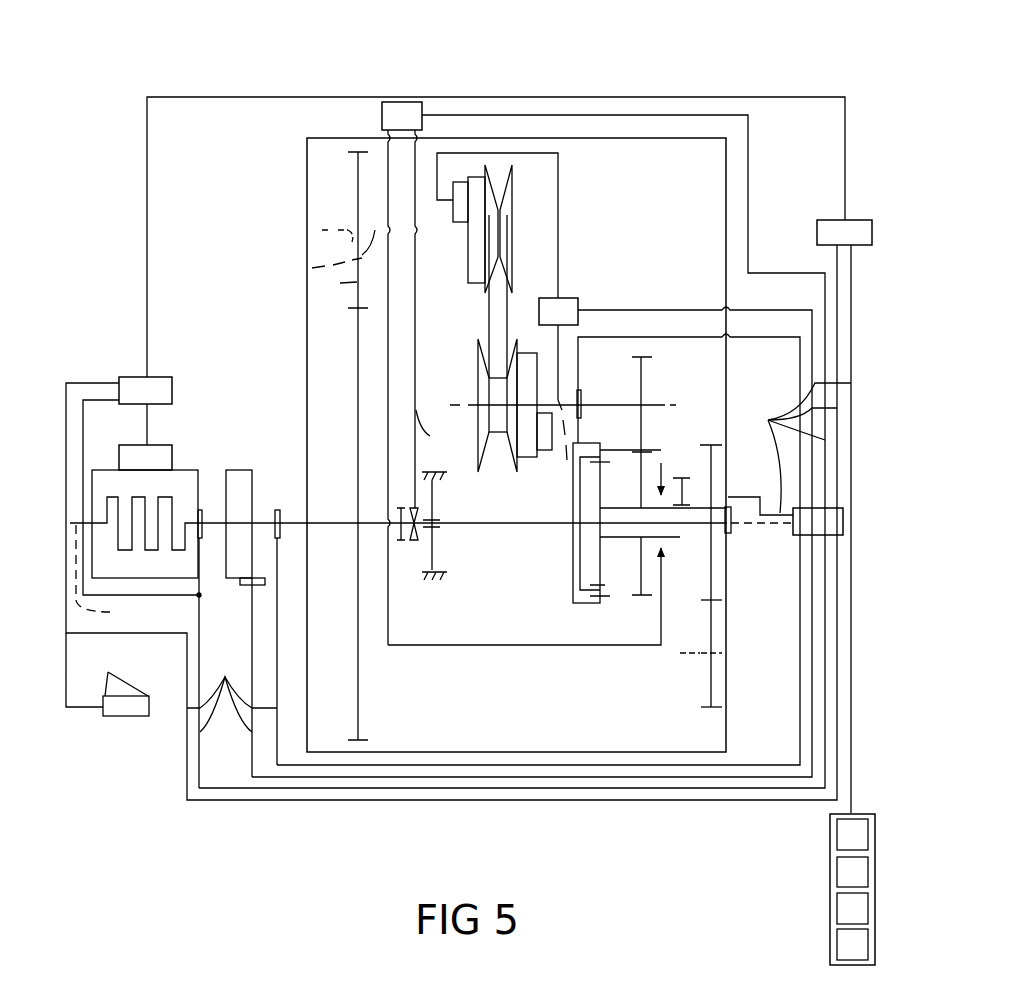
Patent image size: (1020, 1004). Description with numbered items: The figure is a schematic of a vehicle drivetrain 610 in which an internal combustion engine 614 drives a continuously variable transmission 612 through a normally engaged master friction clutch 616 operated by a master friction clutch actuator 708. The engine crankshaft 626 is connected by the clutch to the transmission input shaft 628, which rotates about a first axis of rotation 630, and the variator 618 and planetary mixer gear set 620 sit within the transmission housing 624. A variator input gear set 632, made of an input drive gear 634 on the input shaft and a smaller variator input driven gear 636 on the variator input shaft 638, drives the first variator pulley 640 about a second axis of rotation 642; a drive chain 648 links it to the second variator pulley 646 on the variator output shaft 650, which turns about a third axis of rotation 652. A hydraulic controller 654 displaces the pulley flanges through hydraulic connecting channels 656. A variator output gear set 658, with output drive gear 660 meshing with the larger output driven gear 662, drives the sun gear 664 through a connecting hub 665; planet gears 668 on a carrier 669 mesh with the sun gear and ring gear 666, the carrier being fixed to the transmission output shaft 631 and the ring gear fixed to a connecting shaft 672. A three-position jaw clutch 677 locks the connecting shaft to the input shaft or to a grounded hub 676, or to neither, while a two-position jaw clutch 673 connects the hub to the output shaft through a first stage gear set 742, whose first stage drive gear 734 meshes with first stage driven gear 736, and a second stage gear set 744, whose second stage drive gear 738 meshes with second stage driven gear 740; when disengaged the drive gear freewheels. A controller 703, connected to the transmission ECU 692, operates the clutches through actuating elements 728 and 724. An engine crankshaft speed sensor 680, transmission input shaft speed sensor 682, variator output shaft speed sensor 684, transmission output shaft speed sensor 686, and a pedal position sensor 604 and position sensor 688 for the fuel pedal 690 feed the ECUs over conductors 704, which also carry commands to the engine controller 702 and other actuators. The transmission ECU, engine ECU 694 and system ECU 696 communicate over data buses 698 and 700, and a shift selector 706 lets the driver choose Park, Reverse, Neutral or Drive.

The vehicle drivetrain 610 is at (608, 74).
The data bus 700 is at (768, 100).
The controller 703 is at (512, 445).
The transmission housing 624 is at (307, 190).
The input drive gear 634 is at (358, 355).
The variator input gear set 632 is at (345, 145).
The continuously variable transmission 612 is at (307, 163).
The second axis of rotation 642 is at (312, 243).
The variator input shaft 638 is at (312, 268).
The variator input driven gear 636 is at (340, 283).
The variator 618 is at (548, 245).
The first variator pulley 640 is at (512, 190).
The hydraulic connecting channel 656 is at (520, 248).
The drive chain 648 is at (488, 325).
The second variator pulley 646 is at (478, 460).
The variator output shaft 650 is at (567, 460).
The actuating element 728 is at (430, 436).
The hydraulic controller 654 is at (532, 537).
The variator output gear set 658 is at (643, 350).
The variator output shaft speed sensor 684 is at (581, 400).
The third axis of rotation 652 is at (652, 400).
The output drive gear 660 is at (652, 365).
The output driven gear 662 is at (641, 458).
The jaw clutch 673 is at (662, 470).
The first stage drive gear 734 is at (712, 462).
The transmission output shaft 631 is at (692, 492).
The conductors 704 is at (519, 557).
The transmission output shaft speed sensor 686 is at (733, 530).
The transmission electronic control unit 692 is at (785, 516).
The system ECU 696 is at (469, 516).
The data bus 698 is at (825, 270).
The shift selector 706 is at (830, 885).
The engine ECU 694 is at (142, 487).
The pedal position sensor 604 is at (78, 395).
The engine controller 702 is at (145, 457).
The internal combustion engine 614 is at (104, 464).
The engine crankshaft 626 is at (195, 512).
The first axis of rotation 630 is at (116, 573).
The engine crankshaft speed sensor 680 is at (200, 510).
The master friction clutch 616 is at (239, 470).
The master friction clutch actuator 708 is at (240, 585).
The transmission input shaft speed sensor 682 is at (277, 510).
The position sensor 688 is at (114, 716).
The fuel pedal 690 is at (130, 683).
The actuating element 724 is at (452, 645).
The connecting shaft 672 is at (422, 515).
The grounded hub 676 is at (440, 535).
The three-position jaw clutch 677 is at (390, 530).
The transmission input shaft 628 is at (336, 528).
The sun gear 664 is at (576, 565).
The connecting hub 665 is at (592, 500).
The ring gear 666 is at (575, 532).
The carrier 669 is at (580, 586).
The planetary mixer gear set 620 is at (580, 612).
The planet gears 668 is at (600, 596).
The second stage driven gear 740 is at (715, 582).
The second stage drive gear 738 is at (712, 672).
The first stage driven gear 736 is at (711, 690).
The second stage gear set 744 is at (712, 713).
The first stage gear set 742 is at (662, 718).